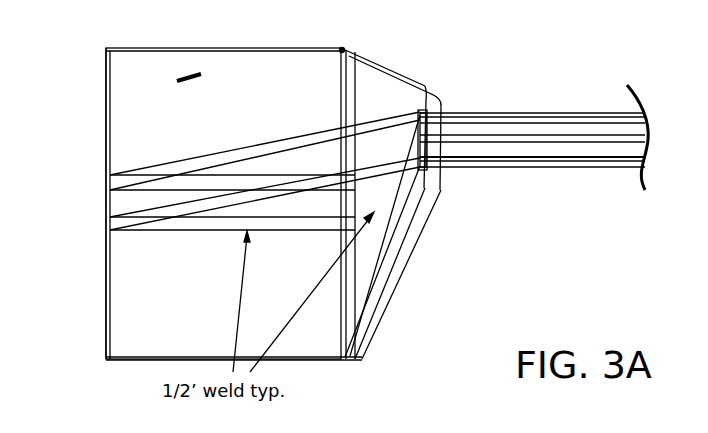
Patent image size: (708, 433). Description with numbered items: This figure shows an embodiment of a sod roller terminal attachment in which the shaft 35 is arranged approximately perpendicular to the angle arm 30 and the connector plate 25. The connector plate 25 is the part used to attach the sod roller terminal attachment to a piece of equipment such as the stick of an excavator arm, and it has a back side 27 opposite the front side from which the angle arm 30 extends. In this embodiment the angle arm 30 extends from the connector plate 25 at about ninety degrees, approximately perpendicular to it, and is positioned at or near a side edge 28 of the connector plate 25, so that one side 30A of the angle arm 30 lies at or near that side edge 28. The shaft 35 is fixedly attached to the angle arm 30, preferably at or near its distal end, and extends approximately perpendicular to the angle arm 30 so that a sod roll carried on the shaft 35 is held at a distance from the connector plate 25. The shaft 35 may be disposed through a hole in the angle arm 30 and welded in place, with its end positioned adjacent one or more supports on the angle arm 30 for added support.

The connector plate 25 is at (127, 281).
The back side 27 is at (175, 74).
The side edge 28 is at (105, 121).
The angle arm 30 is at (388, 233).
The one side of the angle arm 30A is at (388, 80).
The shaft 35 is at (530, 120).